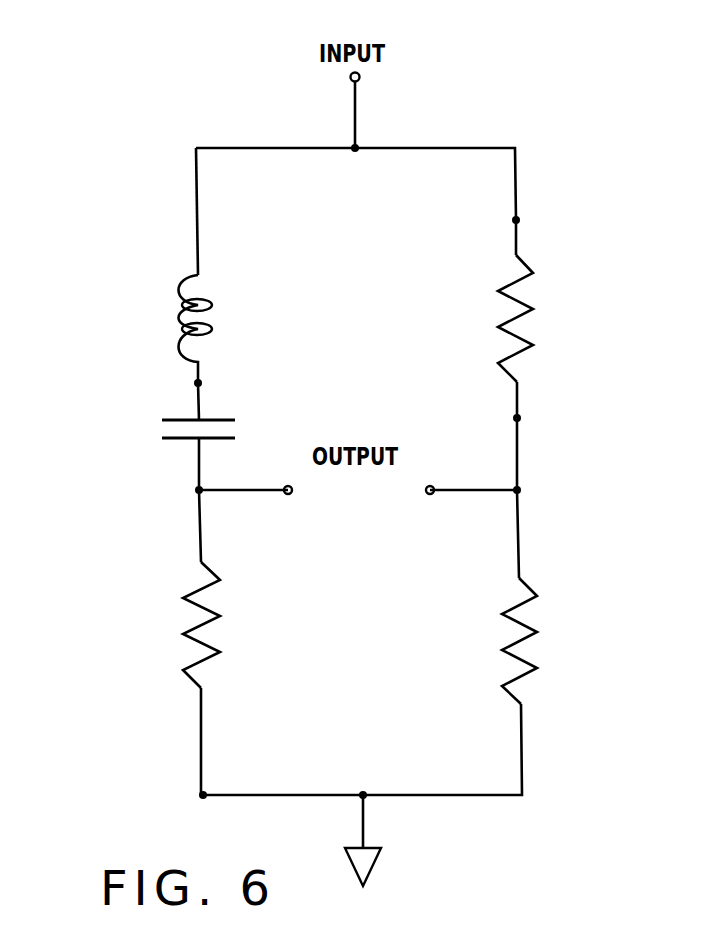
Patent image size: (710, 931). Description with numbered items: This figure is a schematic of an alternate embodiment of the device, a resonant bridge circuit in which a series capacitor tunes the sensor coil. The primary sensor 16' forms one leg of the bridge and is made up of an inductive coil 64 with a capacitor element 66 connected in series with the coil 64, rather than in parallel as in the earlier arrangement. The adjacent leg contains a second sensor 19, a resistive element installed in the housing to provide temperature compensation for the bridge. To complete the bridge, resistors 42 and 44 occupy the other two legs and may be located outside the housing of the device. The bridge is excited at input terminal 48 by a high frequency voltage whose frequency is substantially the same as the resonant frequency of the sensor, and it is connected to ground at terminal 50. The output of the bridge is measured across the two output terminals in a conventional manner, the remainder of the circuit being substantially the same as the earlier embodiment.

The input terminal 48 is at (358, 113).
The primary sensor 16' is at (186, 347).
The inductive coil 64 is at (203, 300).
The capacitor element 66 is at (224, 418).
The second sensor 19 is at (530, 306).
The resistor 42 is at (215, 612).
The resistor 44 is at (530, 625).
The ground terminal 50 is at (363, 826).